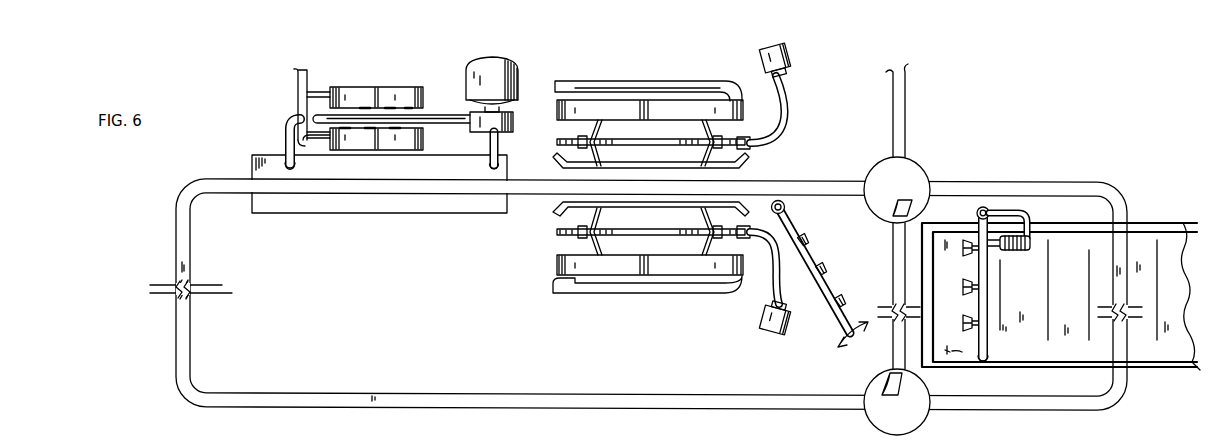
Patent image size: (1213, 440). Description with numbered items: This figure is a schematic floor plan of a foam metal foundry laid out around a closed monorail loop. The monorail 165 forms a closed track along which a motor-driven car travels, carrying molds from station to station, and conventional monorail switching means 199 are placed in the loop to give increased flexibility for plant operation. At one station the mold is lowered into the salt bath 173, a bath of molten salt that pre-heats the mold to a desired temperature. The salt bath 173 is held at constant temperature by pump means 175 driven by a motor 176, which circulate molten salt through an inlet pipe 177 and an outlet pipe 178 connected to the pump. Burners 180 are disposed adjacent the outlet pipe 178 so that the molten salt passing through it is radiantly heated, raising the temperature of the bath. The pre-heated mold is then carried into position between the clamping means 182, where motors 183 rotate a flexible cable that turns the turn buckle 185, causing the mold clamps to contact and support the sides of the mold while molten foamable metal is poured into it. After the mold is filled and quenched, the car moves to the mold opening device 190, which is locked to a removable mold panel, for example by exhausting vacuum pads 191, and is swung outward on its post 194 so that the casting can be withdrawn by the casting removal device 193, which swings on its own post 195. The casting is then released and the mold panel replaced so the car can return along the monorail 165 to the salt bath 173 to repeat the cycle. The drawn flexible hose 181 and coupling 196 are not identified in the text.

The monorail 165 is at (470, 399).
The salt bath 173 is at (432, 209).
The pump means 175 is at (513, 123).
The motor 176 is at (500, 61).
The inlet pipe 177 is at (499, 150).
The outlet pipe 178 is at (285, 140).
The burners 180 is at (416, 106).
The flexible hose 181 is at (778, 120).
The clamping means 182 is at (557, 162).
The motors 183 is at (786, 72).
The turn buckle 185 is at (602, 146).
The mold opening device 190 is at (829, 284).
The vacuum pads 191 is at (826, 264).
The casting removal device 193 is at (991, 297).
The post 194 is at (786, 207).
The post 195 is at (977, 213).
The coupling 196 is at (1010, 251).
The monorail switching means 199 is at (916, 168).